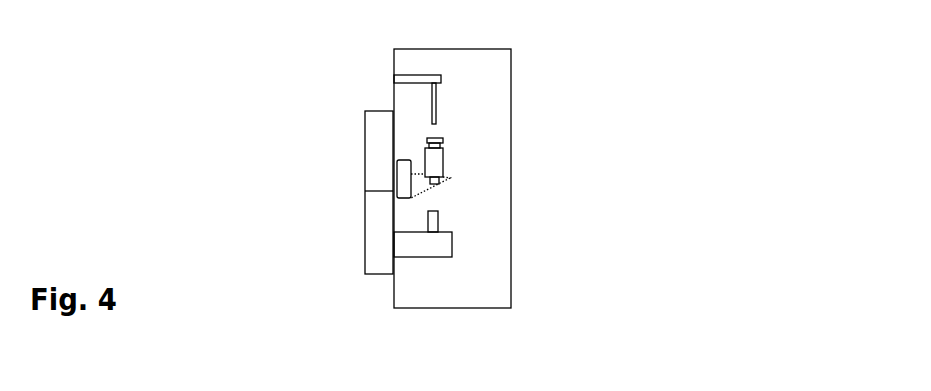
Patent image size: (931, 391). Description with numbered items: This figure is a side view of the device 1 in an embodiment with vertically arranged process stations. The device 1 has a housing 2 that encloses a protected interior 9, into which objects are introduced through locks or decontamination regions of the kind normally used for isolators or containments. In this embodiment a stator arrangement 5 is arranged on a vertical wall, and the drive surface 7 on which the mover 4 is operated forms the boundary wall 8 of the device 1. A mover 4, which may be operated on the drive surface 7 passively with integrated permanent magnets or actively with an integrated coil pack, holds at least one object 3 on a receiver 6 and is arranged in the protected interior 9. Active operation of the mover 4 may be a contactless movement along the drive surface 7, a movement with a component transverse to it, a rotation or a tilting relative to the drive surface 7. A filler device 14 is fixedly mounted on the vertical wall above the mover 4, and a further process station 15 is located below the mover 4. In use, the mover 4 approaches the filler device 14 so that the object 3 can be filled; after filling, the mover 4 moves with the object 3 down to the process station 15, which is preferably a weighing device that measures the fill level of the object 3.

The device 1 is at (540, 87).
The housing 2 is at (522, 178).
The drive surface 7 is at (522, 178).
The boundary wall 8 is at (522, 178).
The protected interior 9 is at (511, 180).
The object 3 is at (432, 153).
The mover 4 is at (405, 169).
The stator arrangement 5 is at (373, 167).
The receiver 6 is at (418, 189).
The filler device 14 is at (427, 82).
The process station 15 is at (432, 247).